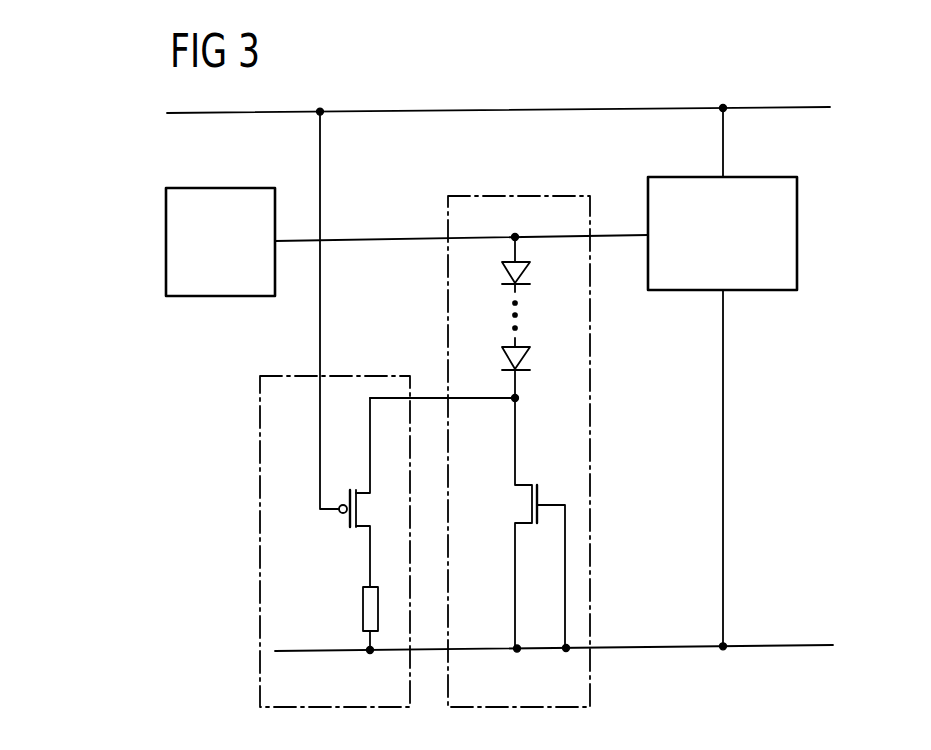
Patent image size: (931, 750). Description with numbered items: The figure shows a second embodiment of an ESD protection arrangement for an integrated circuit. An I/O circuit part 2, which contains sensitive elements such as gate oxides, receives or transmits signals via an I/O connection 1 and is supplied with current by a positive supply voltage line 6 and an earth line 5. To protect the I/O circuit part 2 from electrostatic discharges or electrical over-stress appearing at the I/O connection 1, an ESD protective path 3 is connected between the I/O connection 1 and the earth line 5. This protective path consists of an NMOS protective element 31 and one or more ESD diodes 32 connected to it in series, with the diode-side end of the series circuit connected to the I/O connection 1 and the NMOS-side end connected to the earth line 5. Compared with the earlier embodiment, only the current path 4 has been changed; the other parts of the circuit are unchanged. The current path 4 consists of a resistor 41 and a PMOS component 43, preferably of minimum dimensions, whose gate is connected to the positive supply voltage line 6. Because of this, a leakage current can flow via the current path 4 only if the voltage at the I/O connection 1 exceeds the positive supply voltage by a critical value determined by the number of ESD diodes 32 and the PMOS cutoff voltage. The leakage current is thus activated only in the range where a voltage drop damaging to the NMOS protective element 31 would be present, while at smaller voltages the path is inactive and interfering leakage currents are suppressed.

The I/O connection 1 is at (166, 246).
The I/O circuit part 2 is at (797, 233).
The ESD protective path 3 is at (520, 196).
The current path 4 is at (260, 522).
The earth line 5 is at (781, 645).
The positive supply voltage line 6 is at (768, 107).
The NMOS protective element 31 is at (530, 507).
The ESD diodes 32 is at (527, 270).
The resistor 41 is at (363, 611).
The PMOS component 43 is at (345, 522).